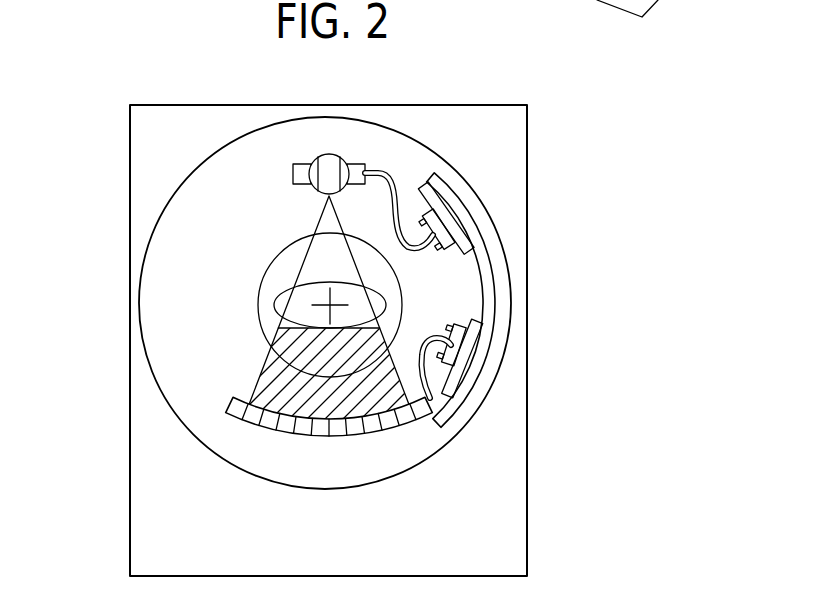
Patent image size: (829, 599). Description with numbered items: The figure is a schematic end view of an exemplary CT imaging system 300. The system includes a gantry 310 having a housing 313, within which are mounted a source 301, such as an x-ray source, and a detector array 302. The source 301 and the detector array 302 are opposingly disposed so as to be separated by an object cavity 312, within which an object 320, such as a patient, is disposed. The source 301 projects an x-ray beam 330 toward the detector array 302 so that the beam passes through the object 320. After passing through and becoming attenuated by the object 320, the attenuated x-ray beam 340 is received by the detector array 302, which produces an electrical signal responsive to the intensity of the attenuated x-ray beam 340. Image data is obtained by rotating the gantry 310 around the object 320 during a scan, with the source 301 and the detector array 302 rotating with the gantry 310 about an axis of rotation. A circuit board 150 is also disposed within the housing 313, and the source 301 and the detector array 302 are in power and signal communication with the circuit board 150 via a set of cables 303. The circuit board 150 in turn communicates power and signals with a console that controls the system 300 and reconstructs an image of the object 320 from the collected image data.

The circuit board 150 is at (487, 282).
The imaging system 300 is at (603, 338).
The source 301 is at (331, 160).
The detector array 302 is at (231, 399).
The set of cables 303 is at (393, 186).
The gantry 310 is at (180, 187).
The object cavity 312 is at (276, 264).
The housing 313 is at (299, 468).
The object 320 is at (273, 305).
The x-ray beam 330 is at (309, 242).
The attenuated x-ray beam 340 is at (270, 375).